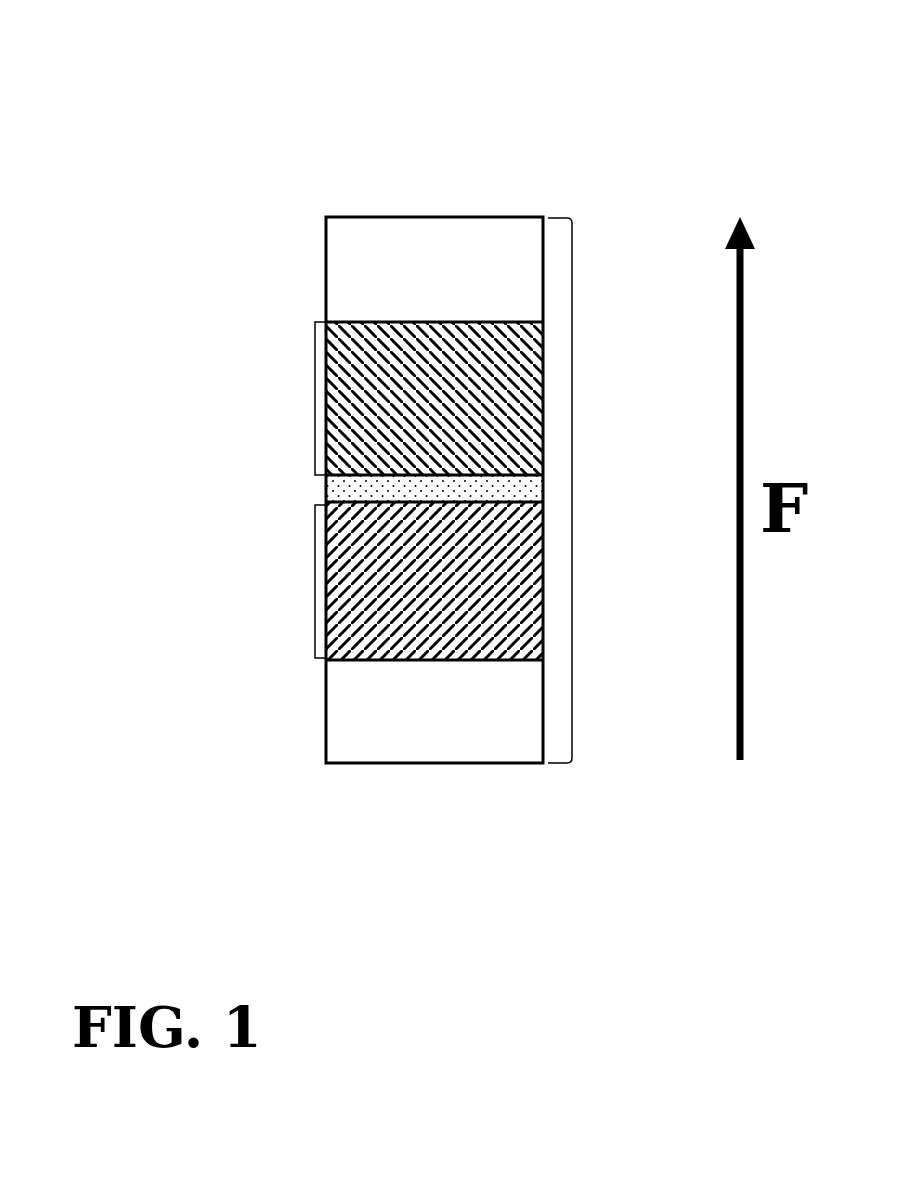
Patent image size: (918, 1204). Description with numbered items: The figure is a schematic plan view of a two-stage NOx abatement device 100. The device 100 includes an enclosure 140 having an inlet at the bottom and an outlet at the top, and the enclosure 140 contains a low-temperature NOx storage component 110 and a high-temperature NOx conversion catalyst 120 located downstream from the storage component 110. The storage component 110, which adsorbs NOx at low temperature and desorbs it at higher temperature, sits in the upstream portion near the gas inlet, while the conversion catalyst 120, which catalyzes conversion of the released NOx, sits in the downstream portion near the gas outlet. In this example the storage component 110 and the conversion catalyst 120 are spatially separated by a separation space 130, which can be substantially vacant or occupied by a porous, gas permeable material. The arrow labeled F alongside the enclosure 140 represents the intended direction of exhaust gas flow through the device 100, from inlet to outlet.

The two-stage NOx abatement device 100 is at (668, 104).
The low-temperature NOx storage component 110 is at (315, 582).
The high-temperature NOx conversion catalyst 120 is at (315, 398).
The separation space 130 is at (306, 489).
The enclosure 140 is at (572, 490).